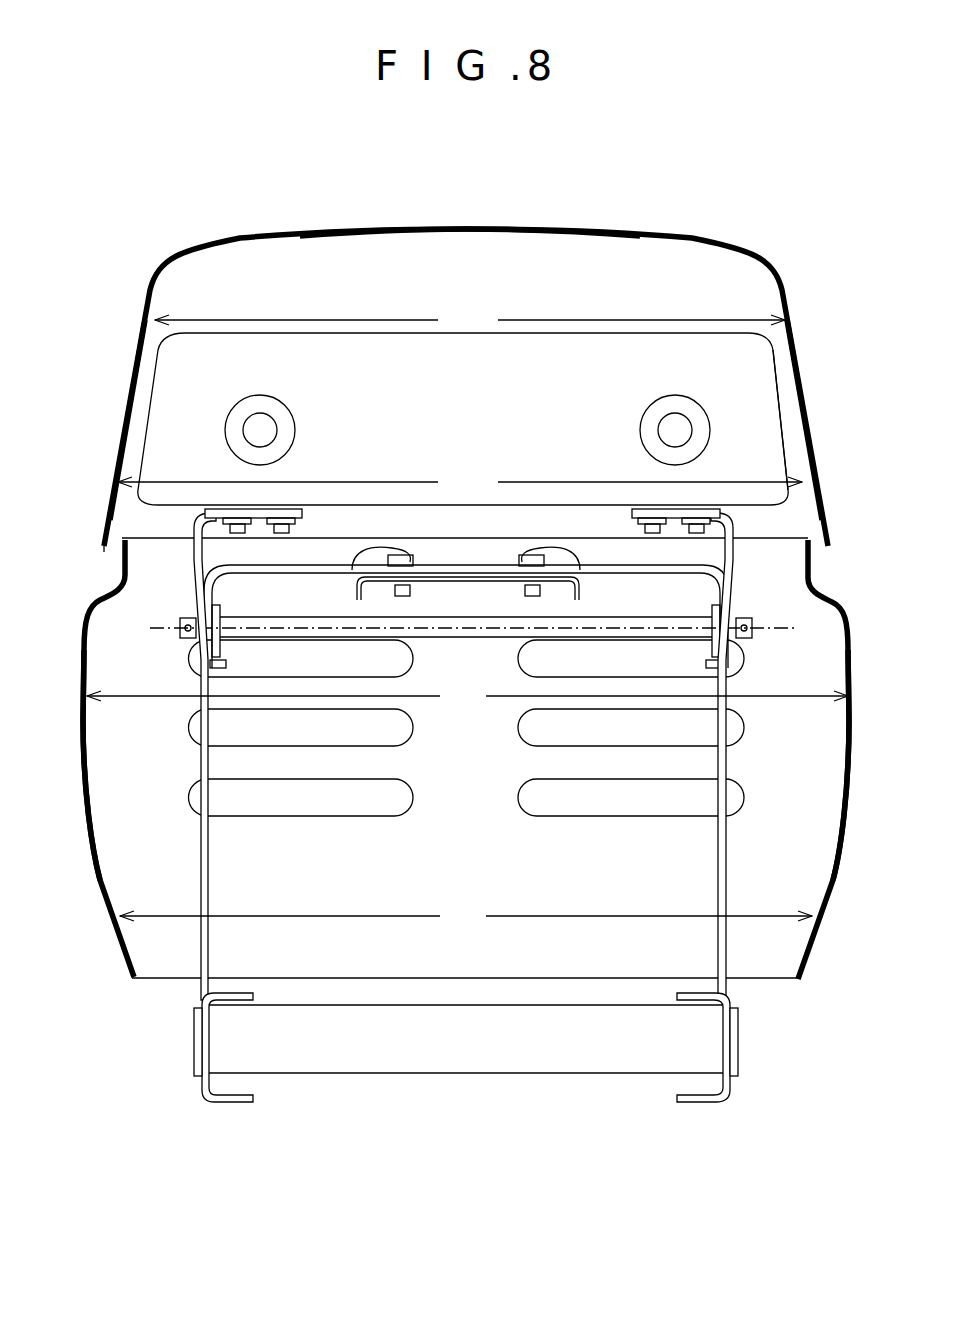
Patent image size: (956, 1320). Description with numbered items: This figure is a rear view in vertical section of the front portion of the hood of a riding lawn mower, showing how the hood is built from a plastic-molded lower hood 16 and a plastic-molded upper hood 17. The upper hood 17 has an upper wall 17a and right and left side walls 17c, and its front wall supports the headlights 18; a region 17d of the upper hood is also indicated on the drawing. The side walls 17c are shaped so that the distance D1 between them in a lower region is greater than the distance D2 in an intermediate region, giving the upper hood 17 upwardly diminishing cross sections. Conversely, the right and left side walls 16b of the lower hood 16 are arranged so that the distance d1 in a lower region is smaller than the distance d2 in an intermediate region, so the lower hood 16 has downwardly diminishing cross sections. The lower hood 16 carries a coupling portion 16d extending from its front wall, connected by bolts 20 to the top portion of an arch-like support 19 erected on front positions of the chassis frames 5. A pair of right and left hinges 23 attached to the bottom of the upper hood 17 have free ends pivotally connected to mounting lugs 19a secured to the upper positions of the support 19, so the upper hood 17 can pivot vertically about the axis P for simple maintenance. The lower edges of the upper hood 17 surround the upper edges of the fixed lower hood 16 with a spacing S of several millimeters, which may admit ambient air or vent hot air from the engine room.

The chassis frames 5 is at (213, 1104).
The lower hood 16 is at (118, 964).
The side walls of the lower hood 16b is at (92, 815).
The coupling portion 16d is at (476, 586).
The upper hood 17 is at (347, 226).
The upper wall 17a is at (508, 227).
The side walls of the upper hood 17c is at (130, 363).
The recess wall of cover 17d is at (790, 430).
The headlights 18 is at (254, 425).
The arch-like support 19 is at (209, 888).
The mounting lugs 19a is at (226, 650).
The bolts 20 is at (360, 552).
The hinges 23 is at (196, 560).
The axis P is at (770, 632).
The spacing S is at (116, 550).
The distance D1 is at (460, 484).
The distance D2 is at (470, 321).
The distance d1 is at (466, 917).
The distance d2 is at (467, 697).